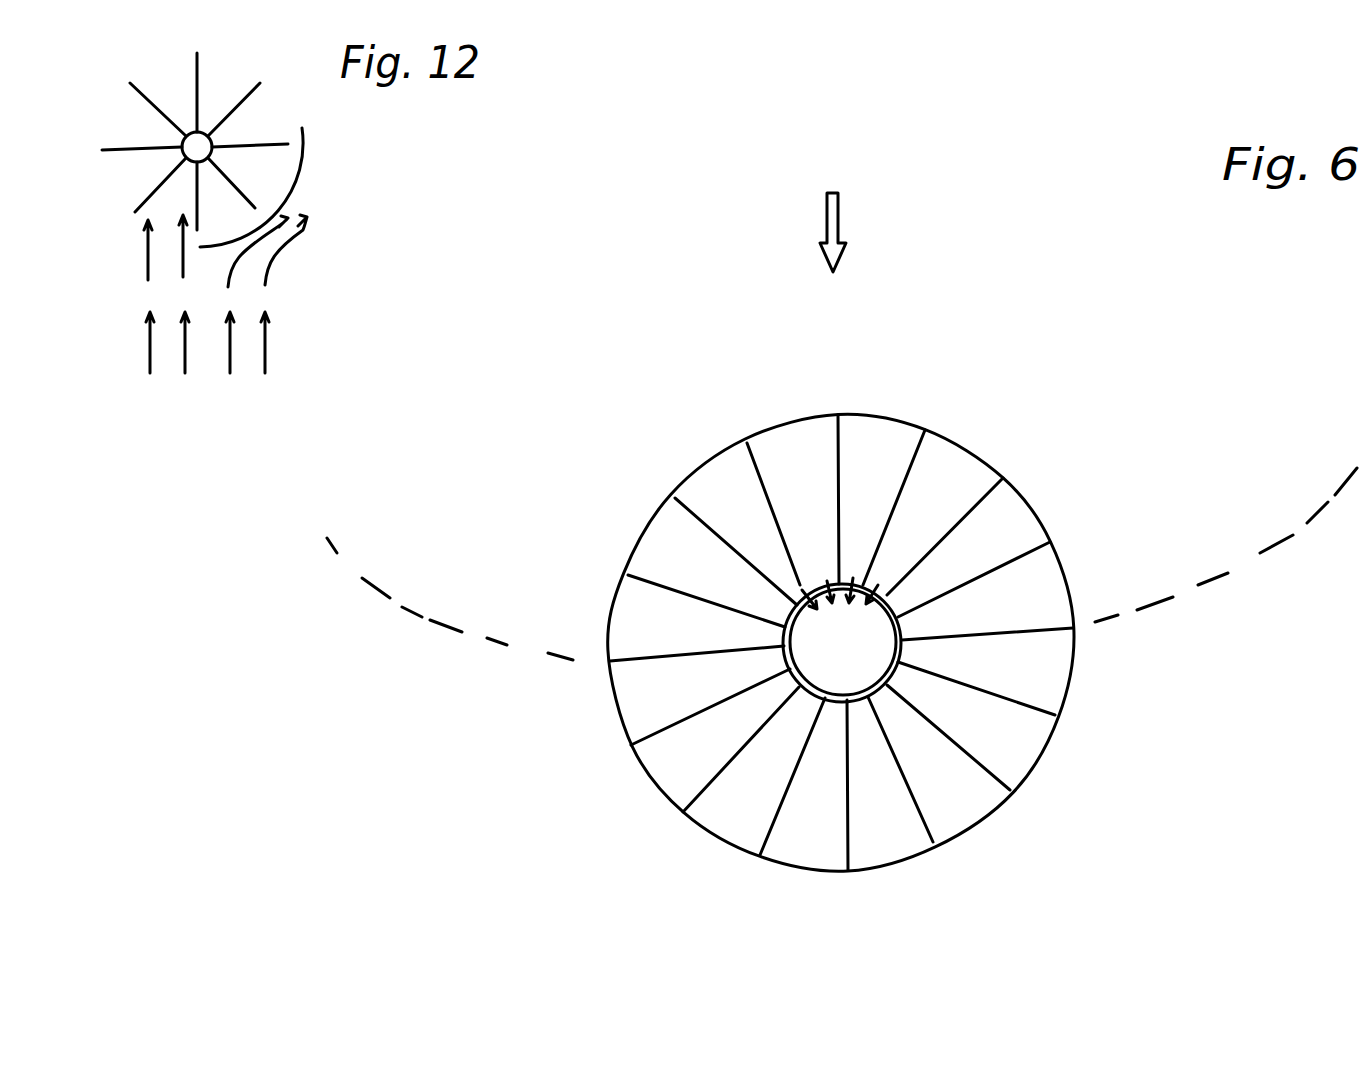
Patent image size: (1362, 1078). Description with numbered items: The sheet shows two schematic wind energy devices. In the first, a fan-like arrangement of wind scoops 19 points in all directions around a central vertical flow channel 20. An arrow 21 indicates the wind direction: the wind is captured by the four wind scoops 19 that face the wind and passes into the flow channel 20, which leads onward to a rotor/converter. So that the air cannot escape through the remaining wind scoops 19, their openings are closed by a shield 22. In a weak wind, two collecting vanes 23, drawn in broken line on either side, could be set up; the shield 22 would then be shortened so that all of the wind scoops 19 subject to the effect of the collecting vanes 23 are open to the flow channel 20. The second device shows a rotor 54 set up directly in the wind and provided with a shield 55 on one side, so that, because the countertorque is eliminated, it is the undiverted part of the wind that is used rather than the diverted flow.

In FIG. 12, the rotor 54 is at (153, 146).
In FIG. 12, the shield 55 is at (292, 193).
In FIG. 6, the wind scoops 19 is at (708, 577).
In FIG. 6, the vertical flow channel 20 is at (867, 633).
In FIG. 6, the arrow 21 is at (830, 222).
In FIG. 6, the shield 22 is at (858, 702).
In FIG. 6, the collecting vanes 23 is at (387, 592).